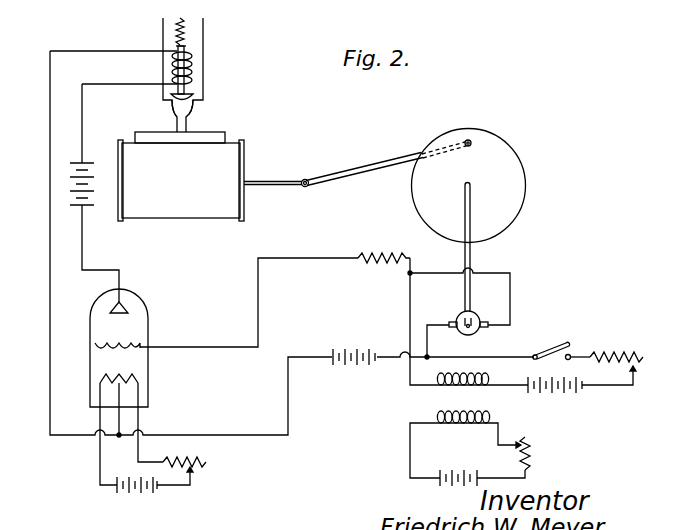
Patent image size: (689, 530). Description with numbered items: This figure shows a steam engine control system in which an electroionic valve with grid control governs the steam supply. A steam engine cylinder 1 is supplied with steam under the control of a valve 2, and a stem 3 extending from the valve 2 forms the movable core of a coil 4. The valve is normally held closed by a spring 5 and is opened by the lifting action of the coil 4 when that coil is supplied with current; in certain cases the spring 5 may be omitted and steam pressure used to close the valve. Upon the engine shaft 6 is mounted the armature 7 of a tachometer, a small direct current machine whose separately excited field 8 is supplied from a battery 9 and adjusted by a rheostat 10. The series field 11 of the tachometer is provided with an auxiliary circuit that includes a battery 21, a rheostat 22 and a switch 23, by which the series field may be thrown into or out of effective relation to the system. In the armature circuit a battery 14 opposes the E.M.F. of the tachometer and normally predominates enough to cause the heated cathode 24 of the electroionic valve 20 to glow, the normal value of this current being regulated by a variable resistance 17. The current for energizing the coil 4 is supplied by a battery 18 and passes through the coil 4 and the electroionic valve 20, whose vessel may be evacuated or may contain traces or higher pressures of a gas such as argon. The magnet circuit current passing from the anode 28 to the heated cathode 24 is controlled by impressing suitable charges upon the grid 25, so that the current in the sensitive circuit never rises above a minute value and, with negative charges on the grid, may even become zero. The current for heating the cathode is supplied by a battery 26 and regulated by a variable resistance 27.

The steam engine cylinder 1 is at (243, 157).
The valve 2 is at (192, 103).
The stem 3 is at (190, 92).
The coil 4 is at (193, 69).
The spring 5 is at (186, 36).
The engine shaft 6 is at (471, 257).
The armature 7 is at (474, 314).
The separately excited field 8 is at (438, 420).
The battery 9 is at (442, 490).
The rheostat 10 is at (532, 453).
The series field 11 is at (467, 392).
The battery 14 is at (350, 366).
The variable resistance 17 is at (383, 252).
The battery 18 is at (70, 185).
The electroionic valve 20 is at (90, 372).
The battery 21 is at (546, 396).
The rheostat 22 is at (612, 355).
The switch 23 is at (560, 343).
The heated cathode 24 is at (140, 380).
The grid 25 is at (97, 343).
The battery 26 is at (135, 495).
The variable resistance 27 is at (196, 472).
The anode 28 is at (130, 310).